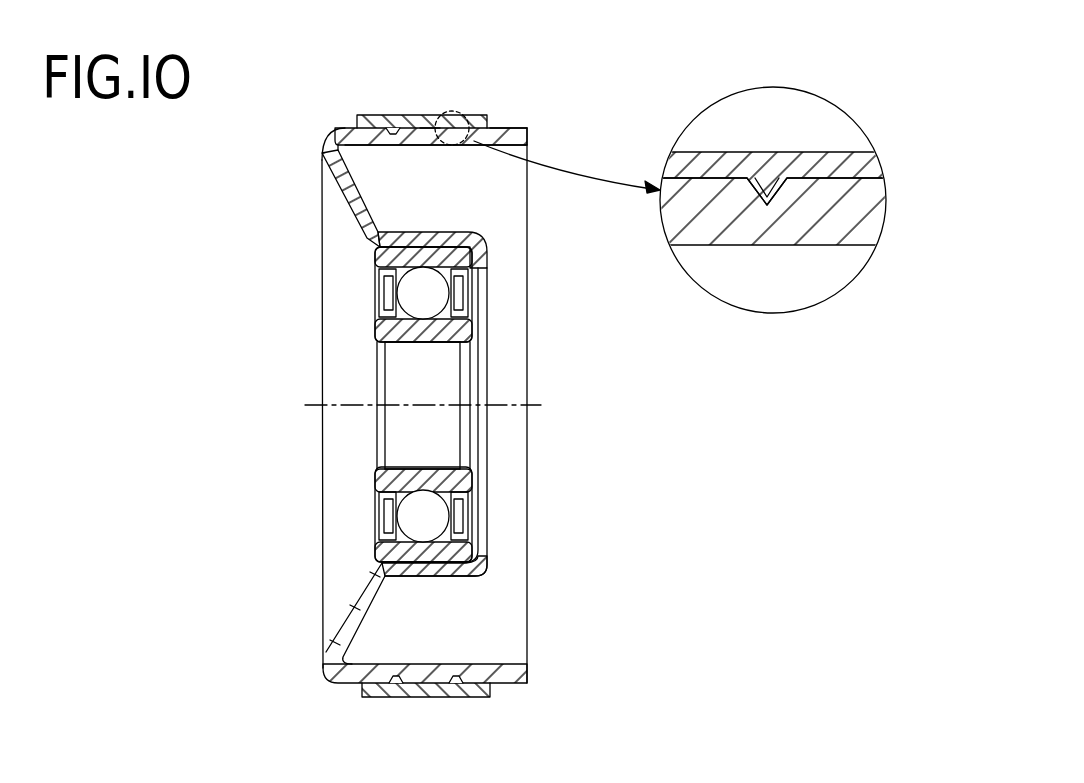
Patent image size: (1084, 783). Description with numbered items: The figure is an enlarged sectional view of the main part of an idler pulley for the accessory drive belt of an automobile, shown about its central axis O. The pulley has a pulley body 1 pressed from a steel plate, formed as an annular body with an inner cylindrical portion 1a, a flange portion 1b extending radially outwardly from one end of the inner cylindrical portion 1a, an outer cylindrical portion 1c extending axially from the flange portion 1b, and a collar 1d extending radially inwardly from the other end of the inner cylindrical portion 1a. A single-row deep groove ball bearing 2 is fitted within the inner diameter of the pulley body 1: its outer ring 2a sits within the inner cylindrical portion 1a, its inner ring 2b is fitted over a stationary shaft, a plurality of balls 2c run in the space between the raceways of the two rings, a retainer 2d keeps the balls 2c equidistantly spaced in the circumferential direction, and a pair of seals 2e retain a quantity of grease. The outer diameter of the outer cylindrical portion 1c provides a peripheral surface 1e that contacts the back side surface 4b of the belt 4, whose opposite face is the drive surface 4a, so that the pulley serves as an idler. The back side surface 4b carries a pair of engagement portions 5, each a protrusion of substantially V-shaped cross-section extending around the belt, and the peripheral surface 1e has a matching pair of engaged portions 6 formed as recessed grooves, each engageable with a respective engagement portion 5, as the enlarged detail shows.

The pulley body 1 is at (536, 120).
The inner cylindrical portion 1a is at (445, 233).
The flange portion 1b is at (347, 192).
The outer cylindrical portion 1c is at (430, 128).
The collar 1d is at (480, 262).
The peripheral surface 1e is at (500, 128).
The ball bearing 2 is at (482, 293).
The outer ring 2a is at (380, 253).
The inner ring 2b is at (385, 330).
The balls 2c is at (423, 307).
The retainer 2d is at (393, 292).
The seals 2e is at (468, 308).
The belt 4 is at (344, 116).
The drive surface 4a is at (368, 118).
The back side surface 4b is at (365, 148).
The engagement portions 5 is at (393, 128).
The engaged portions 6 is at (398, 146).
The rotation axis O is at (425, 408).